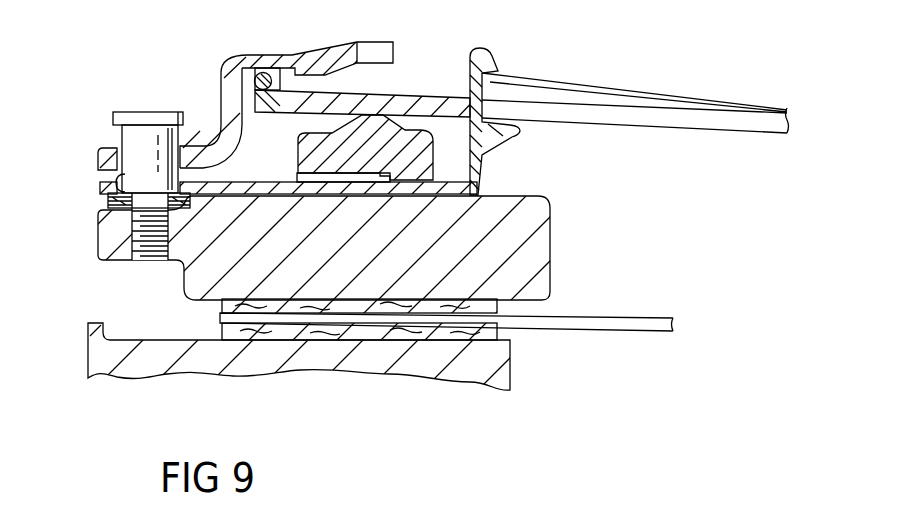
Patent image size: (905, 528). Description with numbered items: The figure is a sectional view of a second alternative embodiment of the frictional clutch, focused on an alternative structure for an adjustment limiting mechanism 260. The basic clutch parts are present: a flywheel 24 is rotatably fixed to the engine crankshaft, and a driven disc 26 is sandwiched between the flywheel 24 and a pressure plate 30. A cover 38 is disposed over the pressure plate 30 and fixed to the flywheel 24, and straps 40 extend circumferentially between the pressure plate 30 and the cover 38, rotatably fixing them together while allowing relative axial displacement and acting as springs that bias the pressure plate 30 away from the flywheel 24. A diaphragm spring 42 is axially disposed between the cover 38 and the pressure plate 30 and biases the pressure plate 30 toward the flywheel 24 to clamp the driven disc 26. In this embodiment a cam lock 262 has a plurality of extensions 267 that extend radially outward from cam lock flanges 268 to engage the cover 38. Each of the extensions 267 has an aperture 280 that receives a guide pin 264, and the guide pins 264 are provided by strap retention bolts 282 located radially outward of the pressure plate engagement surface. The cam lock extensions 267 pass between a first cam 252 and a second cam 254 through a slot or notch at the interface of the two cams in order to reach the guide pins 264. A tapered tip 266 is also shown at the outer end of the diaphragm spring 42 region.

The flywheel 24 is at (88, 352).
The driven disc 26 is at (636, 316).
The pressure plate 30 is at (550, 258).
The cover 38 is at (221, 92).
The straps 40 is at (108, 199).
The diaphragm spring 42 is at (607, 125).
The first cam 252 is at (293, 177).
The second cam 254 is at (400, 128).
The adjustment limiting mechanism 260 is at (566, 72).
The cam lock 262 is at (498, 147).
The guide pin 264 is at (120, 135).
The wedge tip 266 is at (648, 92).
The extensions 267 is at (333, 194).
The cam lock flanges 268 is at (420, 194).
The aperture 280 is at (116, 172).
The strap retention bolts 282 is at (128, 112).